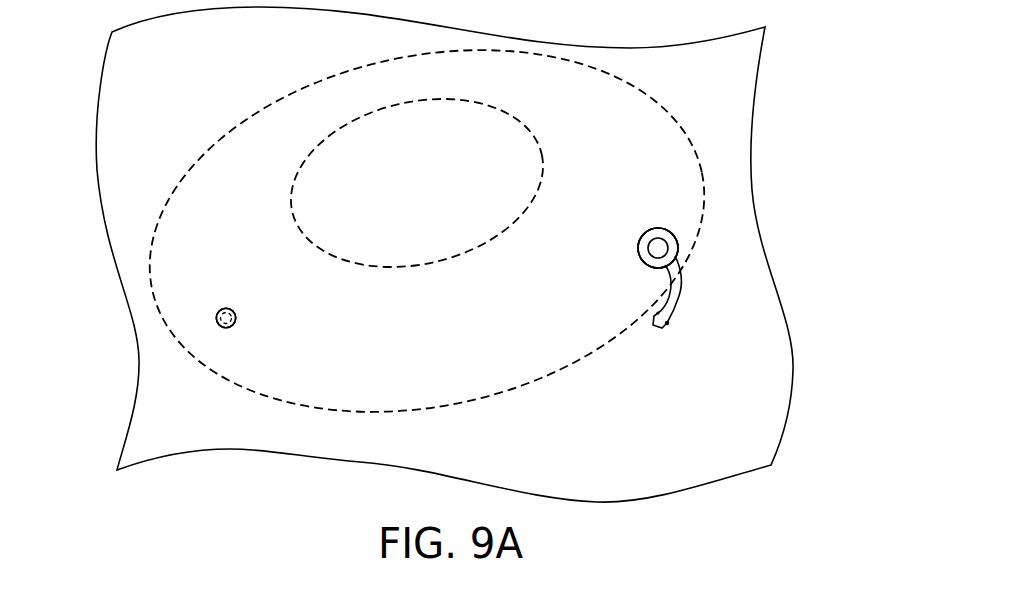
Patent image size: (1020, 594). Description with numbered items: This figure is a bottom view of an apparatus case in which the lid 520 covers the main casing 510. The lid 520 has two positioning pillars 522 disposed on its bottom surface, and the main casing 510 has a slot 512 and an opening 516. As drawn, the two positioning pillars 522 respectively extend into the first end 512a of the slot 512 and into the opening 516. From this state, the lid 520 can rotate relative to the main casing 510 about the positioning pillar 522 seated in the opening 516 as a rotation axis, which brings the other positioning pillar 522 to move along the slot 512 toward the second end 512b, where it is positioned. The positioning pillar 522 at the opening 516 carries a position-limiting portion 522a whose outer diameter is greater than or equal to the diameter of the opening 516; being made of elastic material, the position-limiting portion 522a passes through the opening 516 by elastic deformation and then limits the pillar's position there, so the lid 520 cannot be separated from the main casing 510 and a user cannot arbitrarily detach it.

The main casing 510 is at (740, 80).
The lid 520 is at (703, 158).
The opening 516 is at (217, 320).
The positioning pillar 522 is at (233, 333).
The position-limiting portion 522a is at (227, 331).
The slot 512 is at (682, 288).
The first end 512a is at (687, 241).
The second end 512b is at (677, 331).